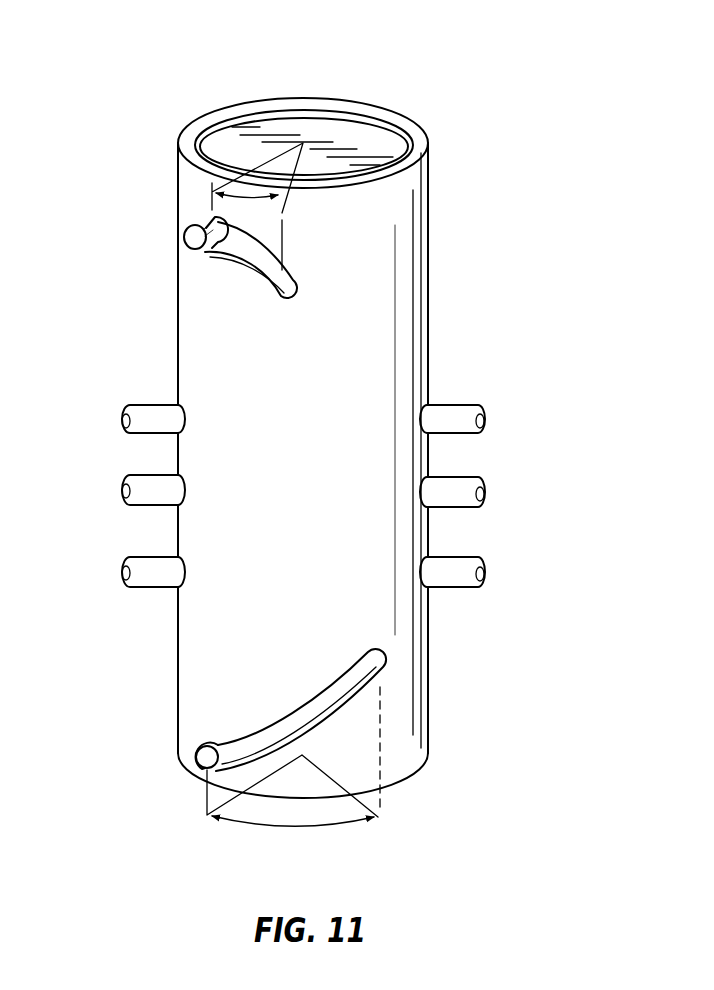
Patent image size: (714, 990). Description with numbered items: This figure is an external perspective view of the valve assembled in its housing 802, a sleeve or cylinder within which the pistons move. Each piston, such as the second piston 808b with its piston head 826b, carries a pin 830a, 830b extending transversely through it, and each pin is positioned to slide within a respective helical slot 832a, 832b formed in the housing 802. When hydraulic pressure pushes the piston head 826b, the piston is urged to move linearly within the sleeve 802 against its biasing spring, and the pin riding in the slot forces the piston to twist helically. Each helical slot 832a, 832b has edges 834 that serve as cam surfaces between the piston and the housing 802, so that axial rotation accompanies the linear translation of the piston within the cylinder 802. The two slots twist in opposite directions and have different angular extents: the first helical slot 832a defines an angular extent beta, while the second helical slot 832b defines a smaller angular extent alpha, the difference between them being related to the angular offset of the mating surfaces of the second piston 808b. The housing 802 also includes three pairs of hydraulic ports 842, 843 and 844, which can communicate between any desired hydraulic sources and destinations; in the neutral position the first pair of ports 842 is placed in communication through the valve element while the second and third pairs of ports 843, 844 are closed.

The housing 802 is at (405, 352).
The second piston 808b is at (346, 105).
The second piston head 826b is at (320, 130).
The first piston pin 830a is at (207, 757).
The second piston pin 830b is at (194, 237).
The first helical slot 832a is at (375, 661).
The second helical slot 832b is at (240, 262).
The helical slot edges 834 is at (274, 257).
The first pair of hydraulic ports 842 is at (143, 485).
The second pair of hydraulic ports 843 is at (145, 566).
The third pair of hydraulic ports 844 is at (143, 412).